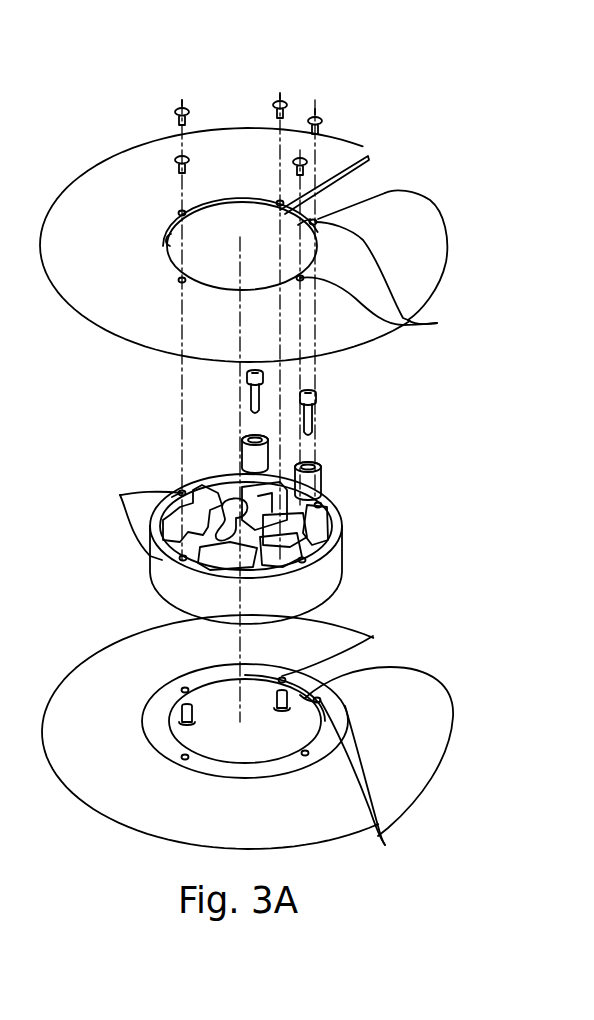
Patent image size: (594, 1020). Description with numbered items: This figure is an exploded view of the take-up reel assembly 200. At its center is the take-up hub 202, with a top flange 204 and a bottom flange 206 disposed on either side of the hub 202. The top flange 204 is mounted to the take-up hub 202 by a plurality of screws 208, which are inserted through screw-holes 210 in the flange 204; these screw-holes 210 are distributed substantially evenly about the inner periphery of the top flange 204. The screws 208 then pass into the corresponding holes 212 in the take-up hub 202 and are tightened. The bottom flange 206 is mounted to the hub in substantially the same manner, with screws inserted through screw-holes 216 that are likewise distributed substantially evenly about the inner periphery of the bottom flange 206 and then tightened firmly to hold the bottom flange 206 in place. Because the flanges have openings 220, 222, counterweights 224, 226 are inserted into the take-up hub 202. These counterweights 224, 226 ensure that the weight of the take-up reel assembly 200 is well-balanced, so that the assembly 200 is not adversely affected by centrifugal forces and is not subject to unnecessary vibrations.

The take-up reel assembly 200 is at (500, 398).
The take-up hub 202 is at (328, 568).
The top flange 204 is at (430, 242).
The bottom flange 206 is at (442, 736).
The screws 208 is at (297, 158).
The screw-holes 210 is at (437, 323).
The holes 212 is at (120, 495).
The screw-holes 216 is at (385, 845).
The opening 220 is at (392, 167).
The opening 222 is at (446, 653).
The counterweight 224 is at (278, 440).
The counterweight 226 is at (323, 476).